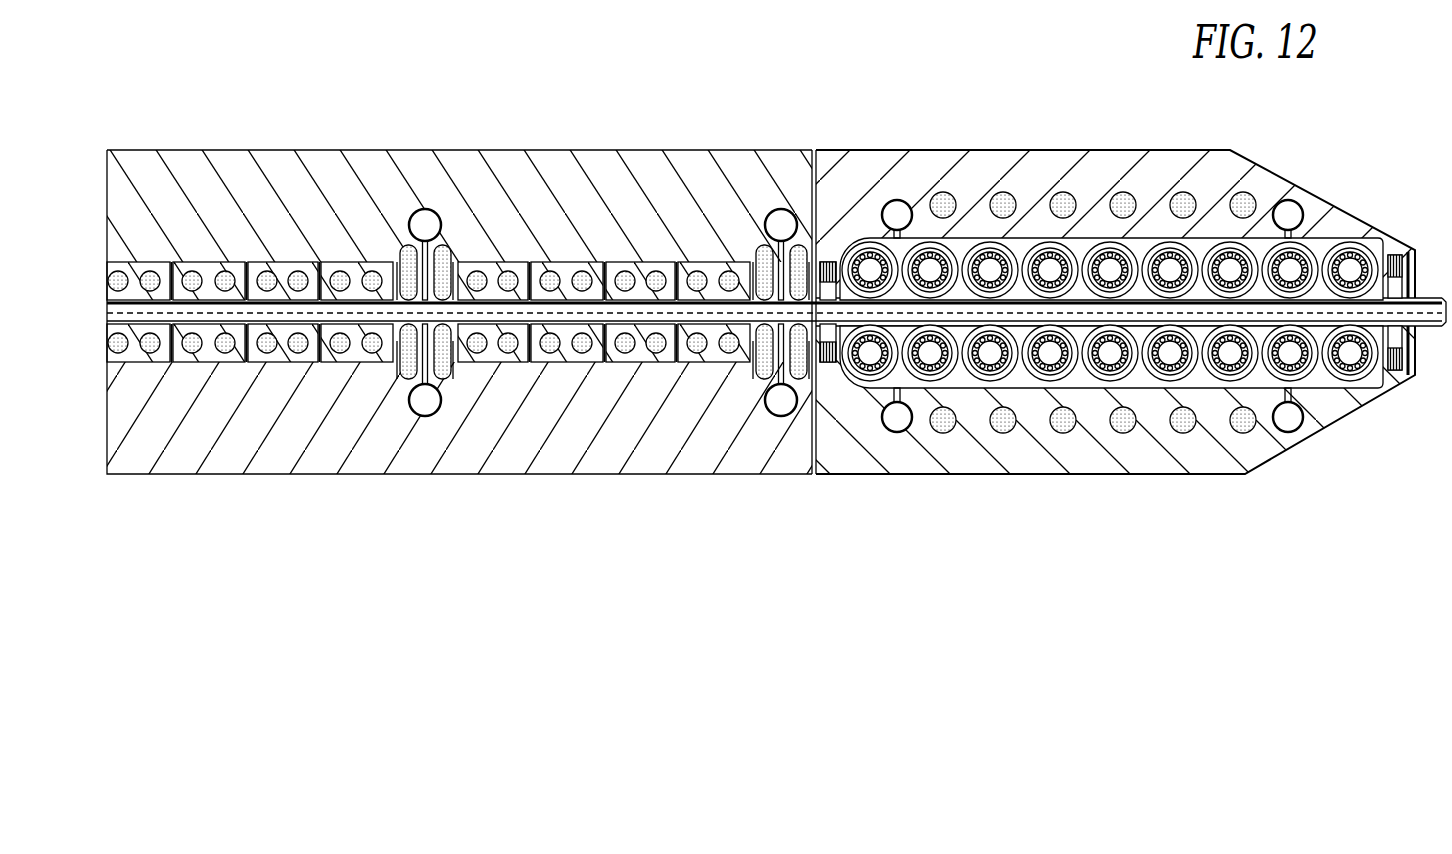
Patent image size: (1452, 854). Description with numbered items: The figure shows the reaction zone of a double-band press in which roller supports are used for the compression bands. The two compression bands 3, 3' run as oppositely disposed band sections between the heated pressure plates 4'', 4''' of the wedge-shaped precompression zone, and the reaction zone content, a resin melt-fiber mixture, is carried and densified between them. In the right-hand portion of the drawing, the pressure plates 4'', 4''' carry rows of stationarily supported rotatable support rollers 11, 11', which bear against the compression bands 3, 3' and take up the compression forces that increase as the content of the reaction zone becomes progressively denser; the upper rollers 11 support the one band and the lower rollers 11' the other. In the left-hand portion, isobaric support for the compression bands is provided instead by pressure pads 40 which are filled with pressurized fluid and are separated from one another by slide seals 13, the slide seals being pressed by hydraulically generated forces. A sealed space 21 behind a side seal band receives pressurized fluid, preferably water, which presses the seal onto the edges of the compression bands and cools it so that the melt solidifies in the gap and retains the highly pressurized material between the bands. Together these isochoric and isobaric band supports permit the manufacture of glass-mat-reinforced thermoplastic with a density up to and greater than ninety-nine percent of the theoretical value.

The compression band 3 is at (1091, 268).
The compression band 3' is at (783, 385).
The heated pressure plate 4'' is at (1115, 193).
The heated pressure plate 4''' is at (1115, 422).
The support roller 11 is at (1110, 214).
The support roller 11' is at (1110, 424).
The slide seal 13 is at (798, 248).
The sealed space 21 is at (478, 262).
The pressure pad 40 is at (327, 268).